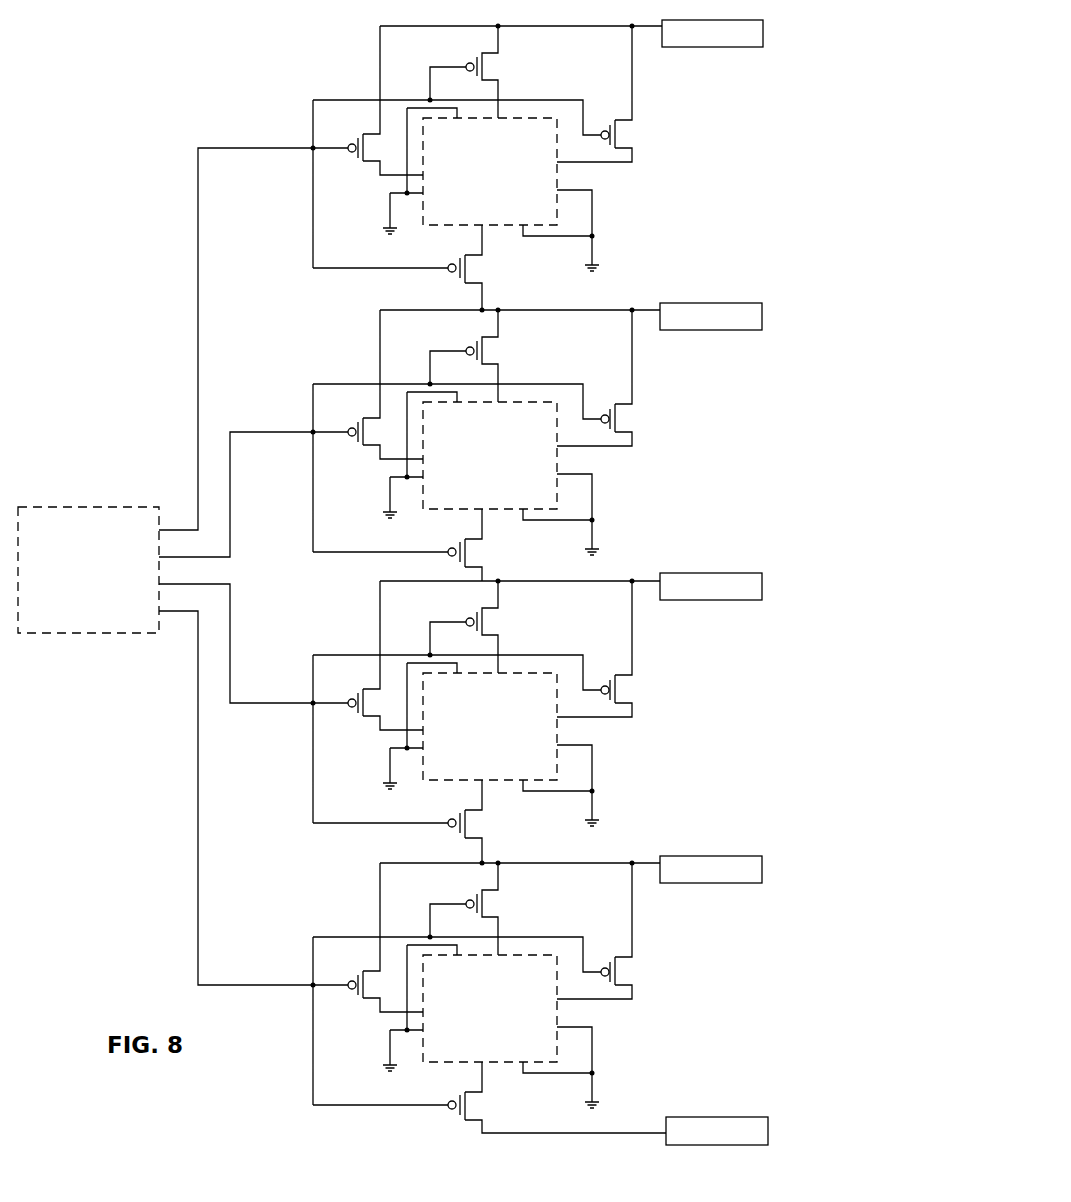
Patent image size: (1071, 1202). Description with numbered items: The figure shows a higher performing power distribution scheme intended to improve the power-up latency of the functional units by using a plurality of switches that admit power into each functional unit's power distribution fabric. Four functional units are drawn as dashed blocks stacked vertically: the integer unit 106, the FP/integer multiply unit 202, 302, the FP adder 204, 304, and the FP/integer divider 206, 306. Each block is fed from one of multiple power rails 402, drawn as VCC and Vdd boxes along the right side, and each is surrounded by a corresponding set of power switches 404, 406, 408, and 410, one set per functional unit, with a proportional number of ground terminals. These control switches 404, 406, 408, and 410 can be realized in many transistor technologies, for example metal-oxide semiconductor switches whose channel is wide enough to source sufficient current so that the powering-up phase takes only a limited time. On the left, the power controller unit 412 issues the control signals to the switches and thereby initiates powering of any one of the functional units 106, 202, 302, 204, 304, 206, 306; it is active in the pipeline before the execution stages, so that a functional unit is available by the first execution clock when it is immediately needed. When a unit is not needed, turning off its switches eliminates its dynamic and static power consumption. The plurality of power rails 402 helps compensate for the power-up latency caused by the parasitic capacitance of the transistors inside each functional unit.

The power rails 402 is at (763, 30).
The power switch 404 is at (477, 56).
The power switch 406 is at (497, 445).
The power switch 408 is at (497, 721).
The power switch 410 is at (497, 997).
The power controller unit 412 is at (71, 632).
The integer unit 106 is at (473, 209).
The FP/integer multiply unit 202 is at (490, 455).
The FP/integer multiply unit 302 is at (490, 455).
The FP adder 204 is at (490, 726).
The FP adder 304 is at (490, 726).
The FP/integer divider 206 is at (490, 1008).
The FP/integer divider 306 is at (490, 1008).